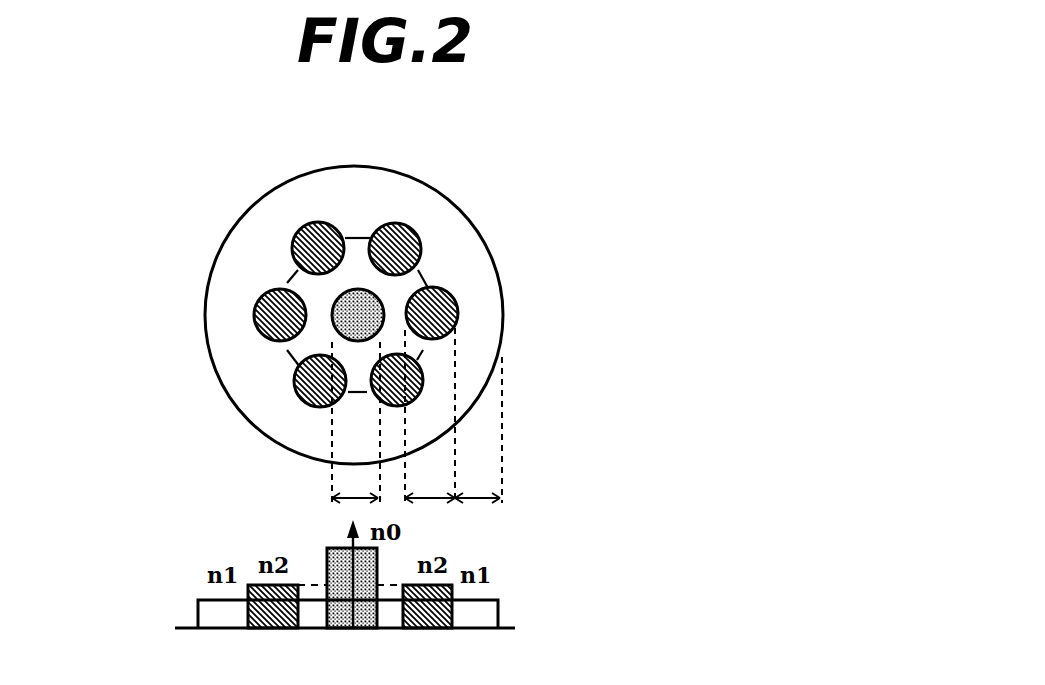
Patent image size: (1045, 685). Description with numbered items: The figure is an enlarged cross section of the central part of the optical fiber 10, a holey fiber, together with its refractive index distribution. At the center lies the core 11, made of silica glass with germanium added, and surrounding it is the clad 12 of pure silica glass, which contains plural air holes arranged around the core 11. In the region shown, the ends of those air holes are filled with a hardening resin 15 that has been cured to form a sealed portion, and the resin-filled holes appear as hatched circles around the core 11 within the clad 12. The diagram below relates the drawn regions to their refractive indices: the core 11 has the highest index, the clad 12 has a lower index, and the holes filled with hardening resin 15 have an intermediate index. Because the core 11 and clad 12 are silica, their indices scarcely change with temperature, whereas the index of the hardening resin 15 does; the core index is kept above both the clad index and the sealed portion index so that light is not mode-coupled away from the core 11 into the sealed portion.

The optical fiber 10 is at (532, 256).
The core 11 is at (333, 300).
The clad 12 is at (477, 345).
The hardening resin 15 is at (406, 224).